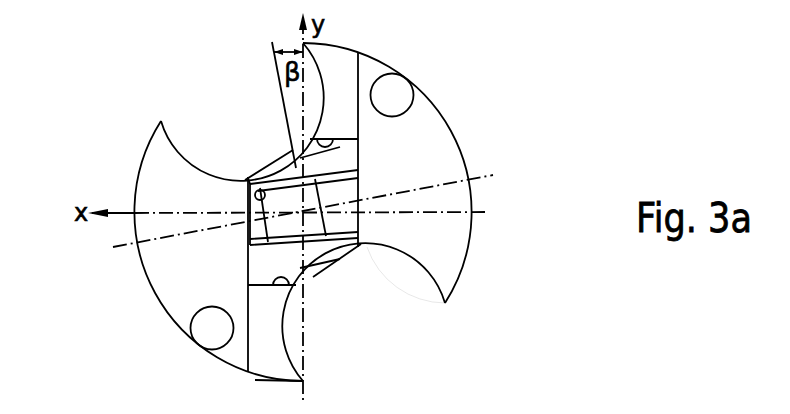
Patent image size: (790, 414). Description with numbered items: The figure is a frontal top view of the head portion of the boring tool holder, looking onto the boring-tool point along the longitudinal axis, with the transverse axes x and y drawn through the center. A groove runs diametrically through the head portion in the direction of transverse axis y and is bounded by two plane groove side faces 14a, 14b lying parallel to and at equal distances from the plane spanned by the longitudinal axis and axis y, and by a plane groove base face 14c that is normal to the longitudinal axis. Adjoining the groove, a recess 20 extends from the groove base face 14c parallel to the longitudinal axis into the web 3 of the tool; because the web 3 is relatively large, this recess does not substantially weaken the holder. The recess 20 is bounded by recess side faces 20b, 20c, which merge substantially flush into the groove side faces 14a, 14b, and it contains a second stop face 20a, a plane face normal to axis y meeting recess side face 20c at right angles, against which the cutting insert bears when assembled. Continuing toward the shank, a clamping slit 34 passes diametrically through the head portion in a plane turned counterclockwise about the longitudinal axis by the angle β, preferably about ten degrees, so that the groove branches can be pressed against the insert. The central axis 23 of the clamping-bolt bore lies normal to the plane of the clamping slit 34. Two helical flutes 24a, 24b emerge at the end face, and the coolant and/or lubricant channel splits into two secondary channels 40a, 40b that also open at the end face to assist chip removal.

The web 3 is at (380, 162).
The groove side face 14a is at (362, 146).
The groove side face 14b is at (250, 385).
The groove base face 14c is at (337, 67).
The recess 20 is at (257, 263).
The second stop face 20a is at (290, 283).
The recess side face 20b is at (365, 150).
The recess side face 20c is at (235, 183).
The central axis of bore 23 is at (134, 243).
The flute 24a is at (400, 287).
The flute 24b is at (230, 128).
The clamping slit 34 is at (362, 282).
The secondary channel 40a is at (397, 92).
The secondary channel 40b is at (203, 322).